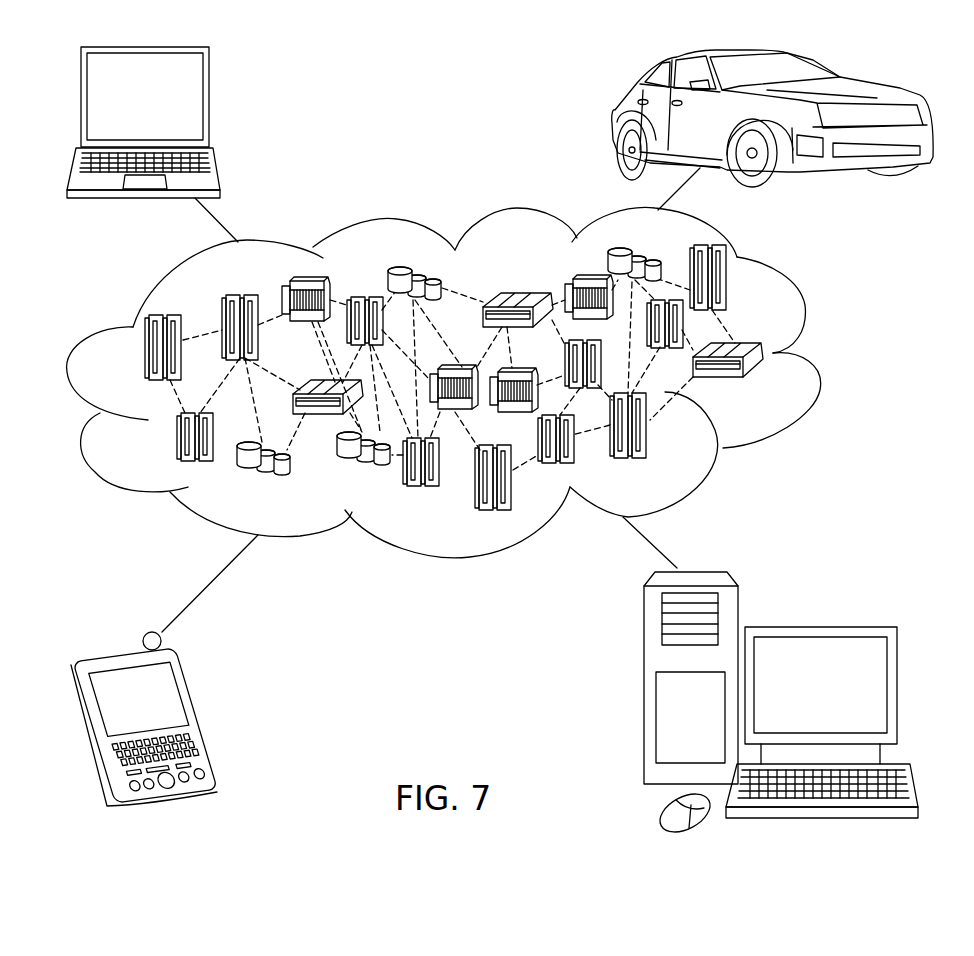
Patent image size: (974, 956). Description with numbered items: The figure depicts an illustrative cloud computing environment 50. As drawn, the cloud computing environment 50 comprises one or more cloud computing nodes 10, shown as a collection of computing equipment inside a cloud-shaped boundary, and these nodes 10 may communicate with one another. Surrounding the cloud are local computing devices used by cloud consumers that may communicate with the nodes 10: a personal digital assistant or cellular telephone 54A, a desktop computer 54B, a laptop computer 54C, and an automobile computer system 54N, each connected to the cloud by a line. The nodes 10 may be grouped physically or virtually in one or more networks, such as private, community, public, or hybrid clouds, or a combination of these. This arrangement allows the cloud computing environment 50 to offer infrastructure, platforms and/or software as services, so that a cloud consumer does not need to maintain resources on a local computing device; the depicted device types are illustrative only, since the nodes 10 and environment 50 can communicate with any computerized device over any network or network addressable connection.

The cloud computing node 10 is at (780, 391).
The cloud computing environment 50 is at (818, 358).
The personal digital assistant (PDA) or cellular telephone 54A is at (200, 712).
The desktop computer 54B is at (818, 626).
The laptop computer 54C is at (208, 102).
The automobile computer system 54N is at (613, 118).